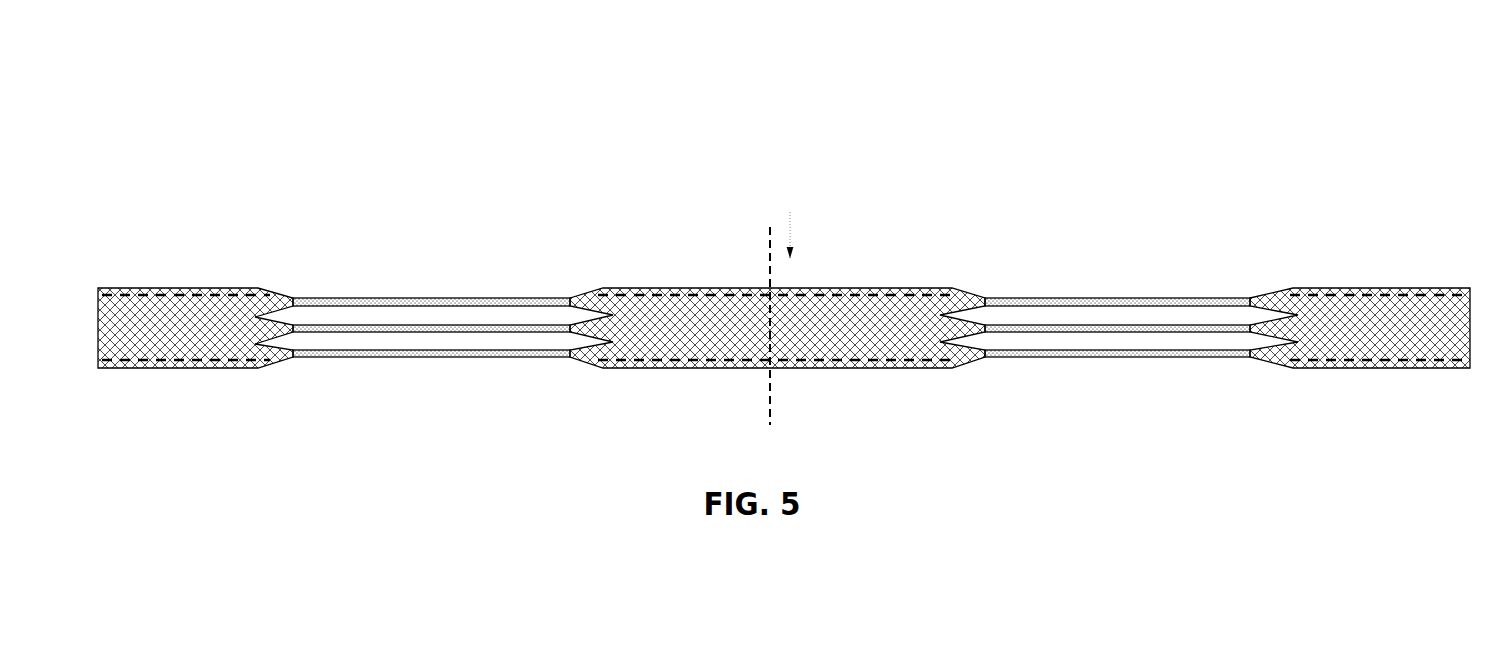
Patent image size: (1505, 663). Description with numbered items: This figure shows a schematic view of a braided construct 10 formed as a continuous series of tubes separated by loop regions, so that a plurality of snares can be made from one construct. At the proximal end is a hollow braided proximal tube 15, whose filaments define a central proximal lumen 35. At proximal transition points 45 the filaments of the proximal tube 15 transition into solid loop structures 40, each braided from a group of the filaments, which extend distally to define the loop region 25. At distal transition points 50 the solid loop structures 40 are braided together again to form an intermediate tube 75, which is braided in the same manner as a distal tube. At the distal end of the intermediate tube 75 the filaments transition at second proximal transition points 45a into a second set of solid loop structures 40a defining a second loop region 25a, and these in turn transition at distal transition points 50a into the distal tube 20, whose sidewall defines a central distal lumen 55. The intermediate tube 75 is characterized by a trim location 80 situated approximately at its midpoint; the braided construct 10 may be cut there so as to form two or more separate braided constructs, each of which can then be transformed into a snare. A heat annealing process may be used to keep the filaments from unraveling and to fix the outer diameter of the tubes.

The braided construct 10 is at (255, 120).
The proximal tube 15 is at (195, 321).
The distal tube 20 is at (1340, 283).
The loop region 25 is at (437, 326).
The second loop region 25a is at (1117, 332).
The central proximal lumen 35 is at (177, 348).
The solid loop structures 40 is at (405, 303).
The solid loop structures 40a is at (1090, 308).
The proximal transition points 45 is at (278, 309).
The second proximal transition points 45a is at (962, 305).
The distal transition points 50 is at (590, 307).
The distal transition points 50a is at (1270, 308).
The central distal lumen 55 is at (844, 346).
The intermediate tube 75 is at (777, 320).
The trim location 80 is at (774, 246).